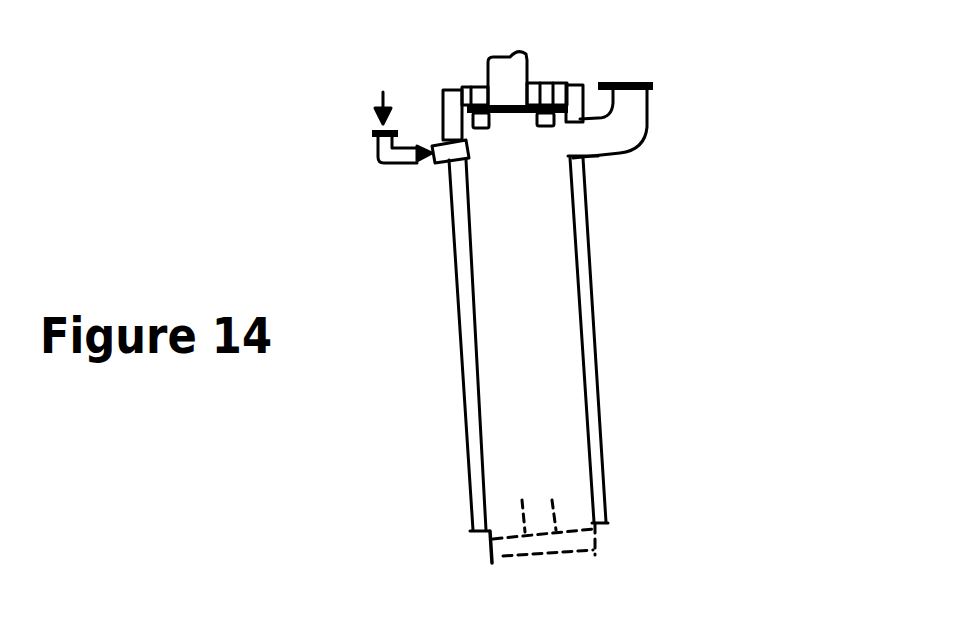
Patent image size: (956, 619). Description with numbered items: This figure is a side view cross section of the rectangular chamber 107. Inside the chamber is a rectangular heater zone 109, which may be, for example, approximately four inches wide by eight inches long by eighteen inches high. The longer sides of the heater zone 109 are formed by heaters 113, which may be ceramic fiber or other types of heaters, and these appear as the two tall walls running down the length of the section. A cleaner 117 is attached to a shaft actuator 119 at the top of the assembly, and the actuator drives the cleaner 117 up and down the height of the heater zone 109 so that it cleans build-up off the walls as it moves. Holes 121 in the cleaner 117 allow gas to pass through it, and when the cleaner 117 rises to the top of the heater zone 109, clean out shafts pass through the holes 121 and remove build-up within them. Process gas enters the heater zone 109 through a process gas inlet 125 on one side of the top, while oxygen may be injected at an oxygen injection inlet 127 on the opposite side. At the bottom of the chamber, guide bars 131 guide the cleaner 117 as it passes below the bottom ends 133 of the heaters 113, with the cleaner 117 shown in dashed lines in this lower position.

The rectangular chamber 107 is at (737, 207).
The heater zone 109 is at (552, 296).
The heaters 113 is at (466, 377).
The cleaner 117 is at (518, 115).
The shaft actuator 119 is at (528, 60).
The holes 121 is at (482, 130).
The process gas inlet 125 is at (650, 101).
The oxygen injection inlet 127 is at (383, 148).
The guide bars 131 is at (490, 545).
The bottom ends 133 is at (473, 536).